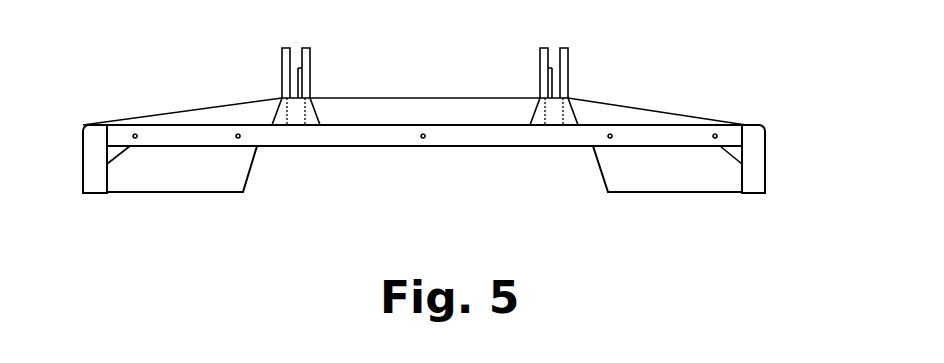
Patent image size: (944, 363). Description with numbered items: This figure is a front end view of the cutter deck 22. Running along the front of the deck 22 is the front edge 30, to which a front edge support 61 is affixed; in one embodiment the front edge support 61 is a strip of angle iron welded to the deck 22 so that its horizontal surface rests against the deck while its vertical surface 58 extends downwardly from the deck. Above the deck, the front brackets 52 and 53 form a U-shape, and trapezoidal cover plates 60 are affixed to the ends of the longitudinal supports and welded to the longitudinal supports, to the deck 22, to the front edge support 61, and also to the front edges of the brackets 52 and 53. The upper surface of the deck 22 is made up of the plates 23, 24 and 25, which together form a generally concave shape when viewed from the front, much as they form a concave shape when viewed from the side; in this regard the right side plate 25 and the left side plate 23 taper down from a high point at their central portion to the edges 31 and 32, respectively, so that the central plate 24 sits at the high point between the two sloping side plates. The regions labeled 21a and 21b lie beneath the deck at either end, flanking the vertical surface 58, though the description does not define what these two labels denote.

The deck 22 is at (436, 109).
The first bed section 21a is at (695, 184).
The second bed section 21b is at (195, 184).
The left side plate 23 is at (592, 106).
The plate 24 is at (347, 97).
The right side plate 25 is at (228, 109).
The front edge 30 is at (492, 138).
The edge 31 is at (83, 125).
The edge 32 is at (766, 129).
The front bracket 52 is at (284, 48).
The front bracket 53 is at (566, 48).
The vertical surface 58 is at (303, 137).
The trapezoidal cover plate 60 is at (280, 97).
The front edge support 61 is at (358, 138).